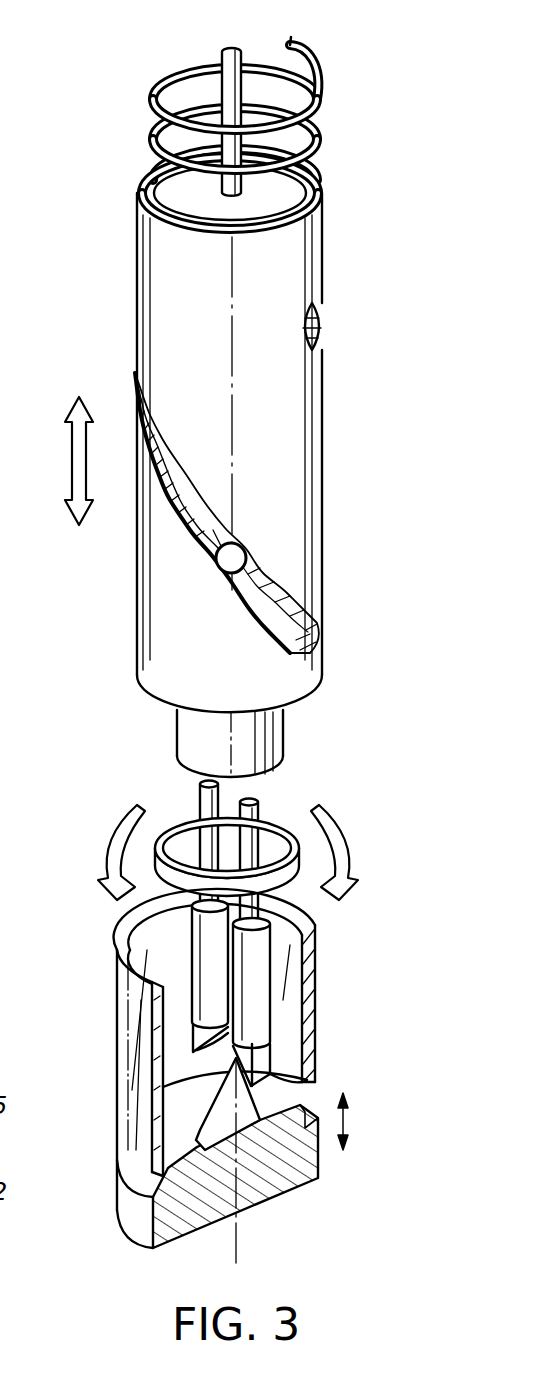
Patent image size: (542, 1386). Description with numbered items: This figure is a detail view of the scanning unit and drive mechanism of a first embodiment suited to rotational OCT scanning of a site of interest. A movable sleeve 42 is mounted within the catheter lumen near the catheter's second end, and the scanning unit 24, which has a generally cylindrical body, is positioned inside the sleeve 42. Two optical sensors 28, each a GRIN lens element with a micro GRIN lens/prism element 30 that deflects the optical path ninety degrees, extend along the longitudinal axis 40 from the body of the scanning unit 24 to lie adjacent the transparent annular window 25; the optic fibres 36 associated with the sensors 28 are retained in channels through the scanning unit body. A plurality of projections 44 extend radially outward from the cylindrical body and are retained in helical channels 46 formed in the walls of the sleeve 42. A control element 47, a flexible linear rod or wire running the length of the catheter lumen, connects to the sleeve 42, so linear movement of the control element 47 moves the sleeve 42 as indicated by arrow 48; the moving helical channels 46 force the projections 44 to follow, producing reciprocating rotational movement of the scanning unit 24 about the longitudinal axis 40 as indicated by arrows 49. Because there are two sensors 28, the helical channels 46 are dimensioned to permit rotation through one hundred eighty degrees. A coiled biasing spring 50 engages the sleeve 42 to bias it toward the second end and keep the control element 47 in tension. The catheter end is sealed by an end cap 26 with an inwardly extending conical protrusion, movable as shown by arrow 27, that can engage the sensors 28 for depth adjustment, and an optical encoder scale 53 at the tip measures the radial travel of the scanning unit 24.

The scanning unit 24 is at (256, 735).
The transparent annular window 25 is at (318, 955).
The end cap 26 is at (280, 1175).
The axial movement arrow 27 is at (348, 1112).
The sensor 28 is at (205, 952).
The micro GRIN lens/prism element 30 is at (200, 1035).
The optic fibre 36 is at (262, 815).
The longitudinal axis 40 is at (240, 1237).
The movable sleeve 42 is at (320, 318).
The projection 44 is at (236, 552).
The helical channel 46 is at (248, 590).
The control element 47 is at (222, 52).
The arrow 48 is at (75, 458).
The arrows 49 is at (108, 826).
The coiled biasing spring 50 is at (200, 130).
The optical encoder scale 53 is at (185, 820).